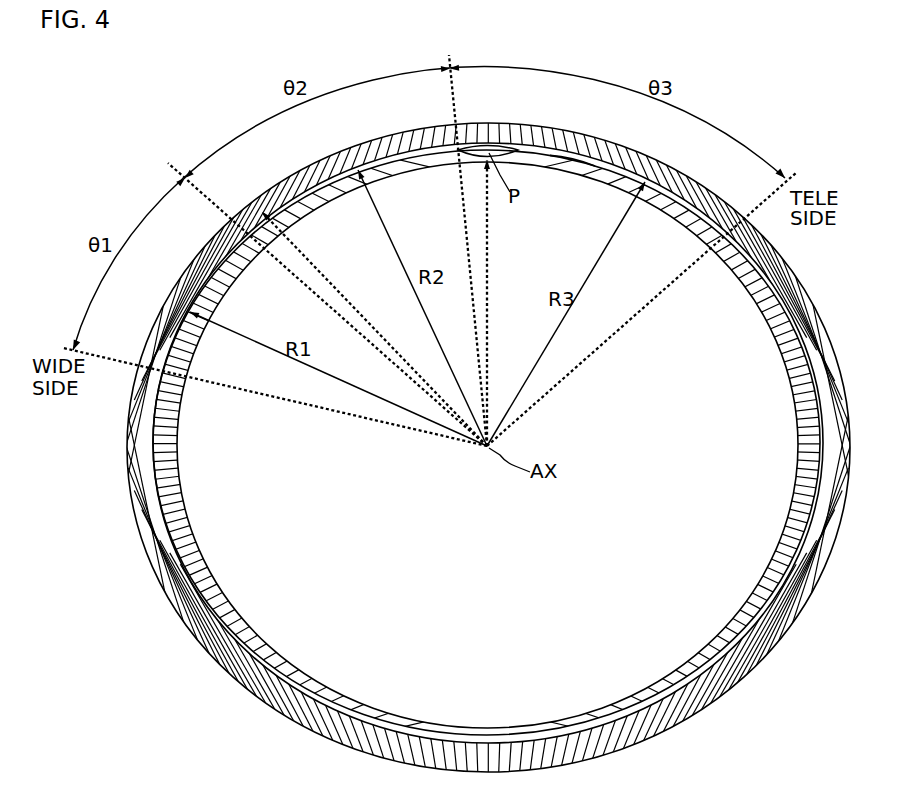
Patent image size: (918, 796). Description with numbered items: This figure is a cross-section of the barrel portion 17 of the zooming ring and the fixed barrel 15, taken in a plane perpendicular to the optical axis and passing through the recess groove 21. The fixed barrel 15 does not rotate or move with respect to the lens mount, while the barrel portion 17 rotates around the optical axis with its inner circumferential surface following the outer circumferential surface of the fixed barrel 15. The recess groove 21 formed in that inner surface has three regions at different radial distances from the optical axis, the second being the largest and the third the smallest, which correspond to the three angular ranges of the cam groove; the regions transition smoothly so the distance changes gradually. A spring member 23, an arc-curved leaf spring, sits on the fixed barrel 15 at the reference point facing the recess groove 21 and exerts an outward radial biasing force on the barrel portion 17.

The fixed barrel 15 is at (328, 695).
The barrel portion 17 is at (293, 721).
The recess groove 21 is at (572, 156).
The spring member 23 is at (506, 146).